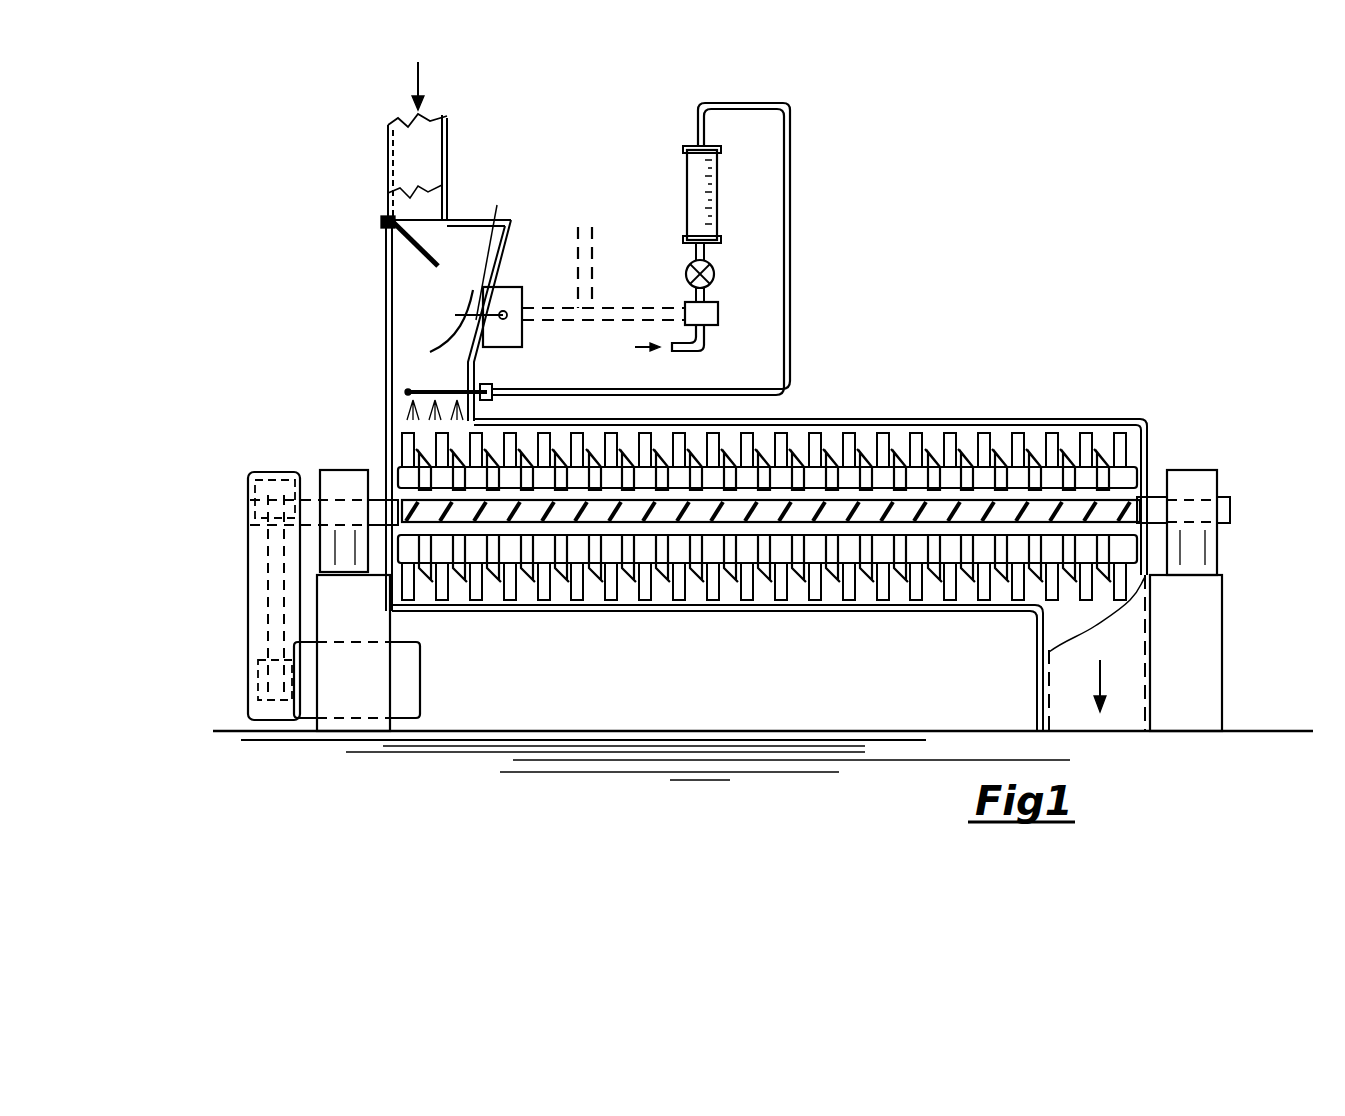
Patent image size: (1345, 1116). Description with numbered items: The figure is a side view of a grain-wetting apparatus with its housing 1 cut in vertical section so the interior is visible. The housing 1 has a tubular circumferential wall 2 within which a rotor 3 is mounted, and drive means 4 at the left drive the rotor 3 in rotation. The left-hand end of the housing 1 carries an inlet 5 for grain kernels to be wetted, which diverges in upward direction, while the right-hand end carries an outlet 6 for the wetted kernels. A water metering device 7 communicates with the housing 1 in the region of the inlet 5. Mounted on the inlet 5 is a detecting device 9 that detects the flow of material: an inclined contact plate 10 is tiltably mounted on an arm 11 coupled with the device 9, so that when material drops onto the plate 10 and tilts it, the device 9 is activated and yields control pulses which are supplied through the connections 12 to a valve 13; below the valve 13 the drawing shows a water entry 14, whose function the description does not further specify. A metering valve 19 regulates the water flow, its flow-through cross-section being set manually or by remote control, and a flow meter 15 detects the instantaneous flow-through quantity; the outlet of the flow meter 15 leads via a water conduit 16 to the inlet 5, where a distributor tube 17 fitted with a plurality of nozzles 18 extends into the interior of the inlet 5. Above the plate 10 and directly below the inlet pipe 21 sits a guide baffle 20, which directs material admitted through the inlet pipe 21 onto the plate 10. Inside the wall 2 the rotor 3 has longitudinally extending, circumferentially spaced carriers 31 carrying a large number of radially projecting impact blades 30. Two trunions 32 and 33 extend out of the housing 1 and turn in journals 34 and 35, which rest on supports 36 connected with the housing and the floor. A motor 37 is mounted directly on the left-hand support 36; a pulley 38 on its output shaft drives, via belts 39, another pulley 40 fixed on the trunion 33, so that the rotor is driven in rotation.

The housing 1 is at (1148, 440).
The tubular circumferential wall 2 is at (887, 418).
The rotor 3 is at (852, 515).
The drive means 4 is at (262, 620).
The inlet 5 is at (413, 343).
The outlet 6 is at (1090, 622).
The water metering device 7 is at (492, 390).
The detecting device 9 is at (513, 303).
The inclined contact plate 10 is at (452, 325).
The arm 11 is at (488, 248).
The connections 12 is at (600, 282).
The valve 13 is at (712, 318).
The inlet 14 is at (700, 347).
The flow meter 15 is at (687, 178).
The water conduit 16 is at (792, 178).
The distributor tube 17 is at (415, 389).
The nozzles 18 is at (410, 400).
The metering valve 19 is at (715, 270).
The guide baffle 20 is at (410, 248).
The inlet pipe 21 is at (427, 147).
The impact blades 30 is at (1118, 440).
The carriers 31 is at (1003, 450).
The trunion 32 is at (1230, 508).
The trunion 33 is at (387, 503).
The journal 34 is at (1200, 535).
The journal 35 is at (340, 492).
The supports 36 is at (365, 628).
The motor 37 is at (412, 688).
The pulley 38 is at (265, 686).
The belts 39 is at (270, 577).
The pulley 40 is at (260, 492).